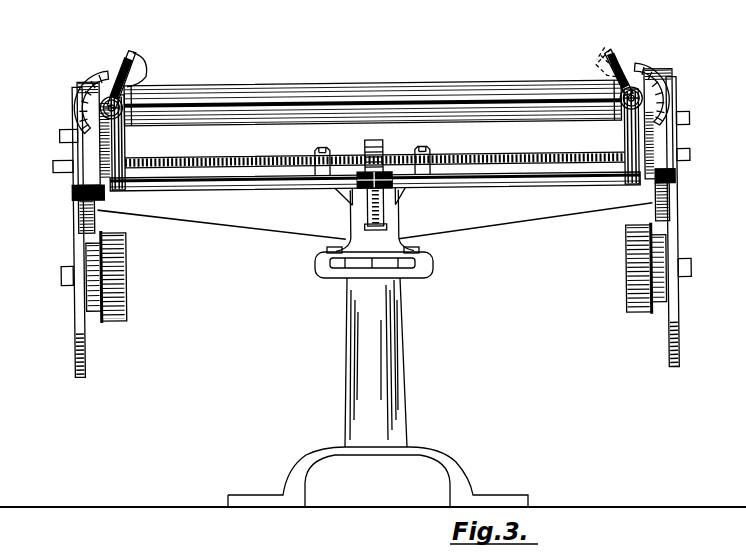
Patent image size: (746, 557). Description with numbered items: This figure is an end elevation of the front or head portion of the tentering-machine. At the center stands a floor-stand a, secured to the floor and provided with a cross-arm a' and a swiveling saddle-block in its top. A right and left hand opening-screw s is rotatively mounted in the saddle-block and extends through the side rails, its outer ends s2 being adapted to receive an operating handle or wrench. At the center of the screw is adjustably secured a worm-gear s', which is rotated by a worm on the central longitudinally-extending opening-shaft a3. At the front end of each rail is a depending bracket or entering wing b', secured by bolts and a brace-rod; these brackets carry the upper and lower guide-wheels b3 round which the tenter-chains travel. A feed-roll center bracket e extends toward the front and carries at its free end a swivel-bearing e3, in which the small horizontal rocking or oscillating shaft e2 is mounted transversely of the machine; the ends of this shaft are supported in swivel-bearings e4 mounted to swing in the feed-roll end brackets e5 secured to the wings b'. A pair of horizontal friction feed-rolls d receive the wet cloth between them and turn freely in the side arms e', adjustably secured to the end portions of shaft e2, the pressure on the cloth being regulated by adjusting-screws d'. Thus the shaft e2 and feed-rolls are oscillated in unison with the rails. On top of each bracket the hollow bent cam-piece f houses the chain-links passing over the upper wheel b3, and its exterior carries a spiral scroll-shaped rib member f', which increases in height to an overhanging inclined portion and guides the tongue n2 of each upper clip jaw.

The floor-stand a is at (378, 376).
The cross-arm a' is at (375, 223).
The opening-shaft a3 is at (383, 206).
The depending bracket or entering wing b' is at (370, 227).
The guide-wheel b3 is at (92, 155).
The friction feed-roll d is at (373, 92).
The adjusting-screw d' is at (375, 127).
The feed-roll center bracket e is at (375, 202).
The side arm e' is at (375, 152).
The rocking or oscillating shaft e2 is at (486, 179).
The swivel-bearing e3 is at (400, 189).
The swivel-bearing e4 is at (668, 180).
The feed-roll end bracket e5 is at (669, 212).
The cam-piece f is at (372, 86).
The scroll-shaped rib member f' is at (369, 67).
The upwardly-bent extension n2 is at (610, 50).
The opening-screw s is at (375, 149).
The worm-gear s' is at (365, 149).
The outer end of screw s2 is at (55, 165).